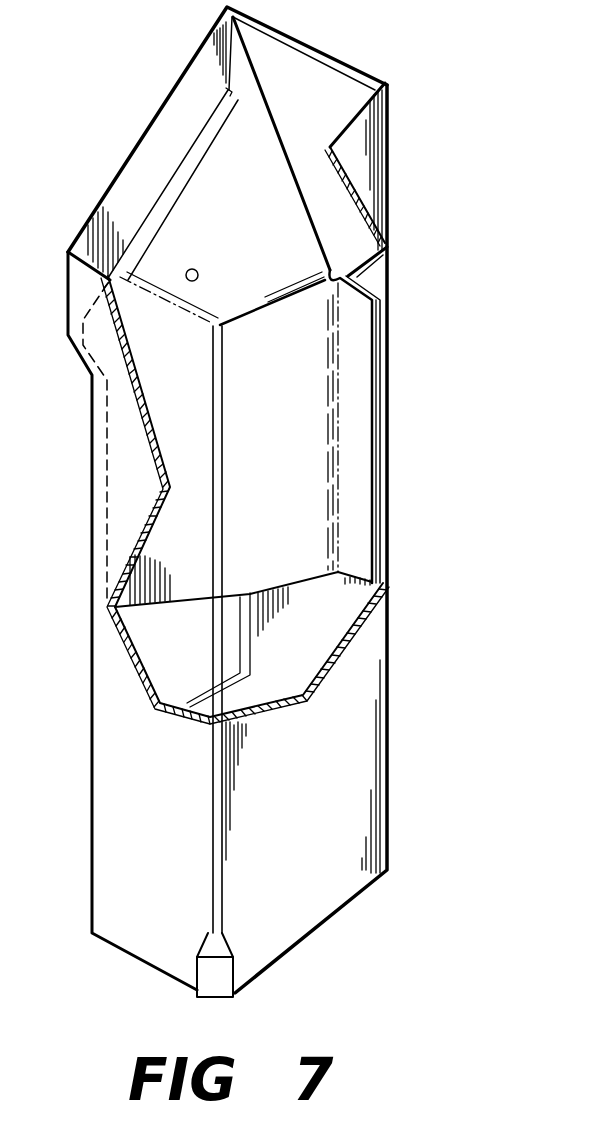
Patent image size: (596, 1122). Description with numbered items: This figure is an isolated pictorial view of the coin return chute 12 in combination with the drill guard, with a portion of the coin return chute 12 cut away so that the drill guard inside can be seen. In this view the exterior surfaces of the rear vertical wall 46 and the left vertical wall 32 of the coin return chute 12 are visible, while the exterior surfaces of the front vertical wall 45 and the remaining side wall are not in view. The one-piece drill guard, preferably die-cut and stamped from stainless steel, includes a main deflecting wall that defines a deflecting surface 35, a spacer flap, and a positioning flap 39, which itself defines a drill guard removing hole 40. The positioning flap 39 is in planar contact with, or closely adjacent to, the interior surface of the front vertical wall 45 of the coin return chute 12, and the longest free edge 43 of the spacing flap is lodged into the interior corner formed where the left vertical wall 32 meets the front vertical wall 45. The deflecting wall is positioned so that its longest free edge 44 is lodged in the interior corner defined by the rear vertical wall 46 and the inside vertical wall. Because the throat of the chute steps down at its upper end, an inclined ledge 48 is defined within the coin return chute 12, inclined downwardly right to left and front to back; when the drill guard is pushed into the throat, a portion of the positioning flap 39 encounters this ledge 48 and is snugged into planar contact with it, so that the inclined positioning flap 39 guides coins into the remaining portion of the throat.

The coin return chute 12 is at (489, 130).
The left vertical wall 32 is at (353, 805).
The deflecting surface 35 is at (294, 487).
The positioning flap 39 is at (183, 197).
The drill guard removing hole 40 is at (197, 270).
The longest free edge of the spacing flap 43 is at (385, 457).
The longest free edge of the deflecting wall 44 is at (105, 506).
The front vertical wall 45 is at (323, 53).
The rear vertical wall 46 is at (147, 852).
The inclined ledge 48 is at (230, 90).